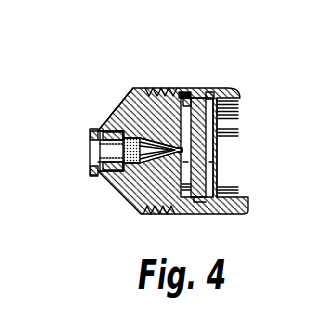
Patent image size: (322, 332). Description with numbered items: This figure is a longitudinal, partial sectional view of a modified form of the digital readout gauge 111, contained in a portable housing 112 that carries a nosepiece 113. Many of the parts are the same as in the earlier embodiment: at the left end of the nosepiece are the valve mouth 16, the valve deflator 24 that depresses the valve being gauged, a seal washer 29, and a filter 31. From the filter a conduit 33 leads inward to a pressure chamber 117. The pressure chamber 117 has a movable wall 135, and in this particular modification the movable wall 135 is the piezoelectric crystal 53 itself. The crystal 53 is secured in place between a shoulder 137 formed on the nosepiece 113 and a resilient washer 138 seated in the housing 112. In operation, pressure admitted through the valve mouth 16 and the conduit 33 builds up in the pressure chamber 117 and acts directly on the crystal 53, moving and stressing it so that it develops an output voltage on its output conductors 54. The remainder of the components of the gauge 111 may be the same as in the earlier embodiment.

The digital readout gauge 111 is at (133, 70).
The portable housing 112 is at (229, 90).
The nosepiece 113 is at (118, 106).
The valve mouth 16 is at (90, 142).
The valve deflator 24 is at (100, 157).
The seal washer 29 is at (125, 160).
The filter 31 is at (134, 167).
The conduit 33 is at (142, 162).
The shoulder 137 is at (192, 100).
The resilient washer 138 is at (210, 98).
The pressure chamber 117 is at (228, 121).
The movable wall 135 is at (216, 141).
The piezoelectric crystal 53 is at (216, 175).
The output conductors 54 is at (218, 191).